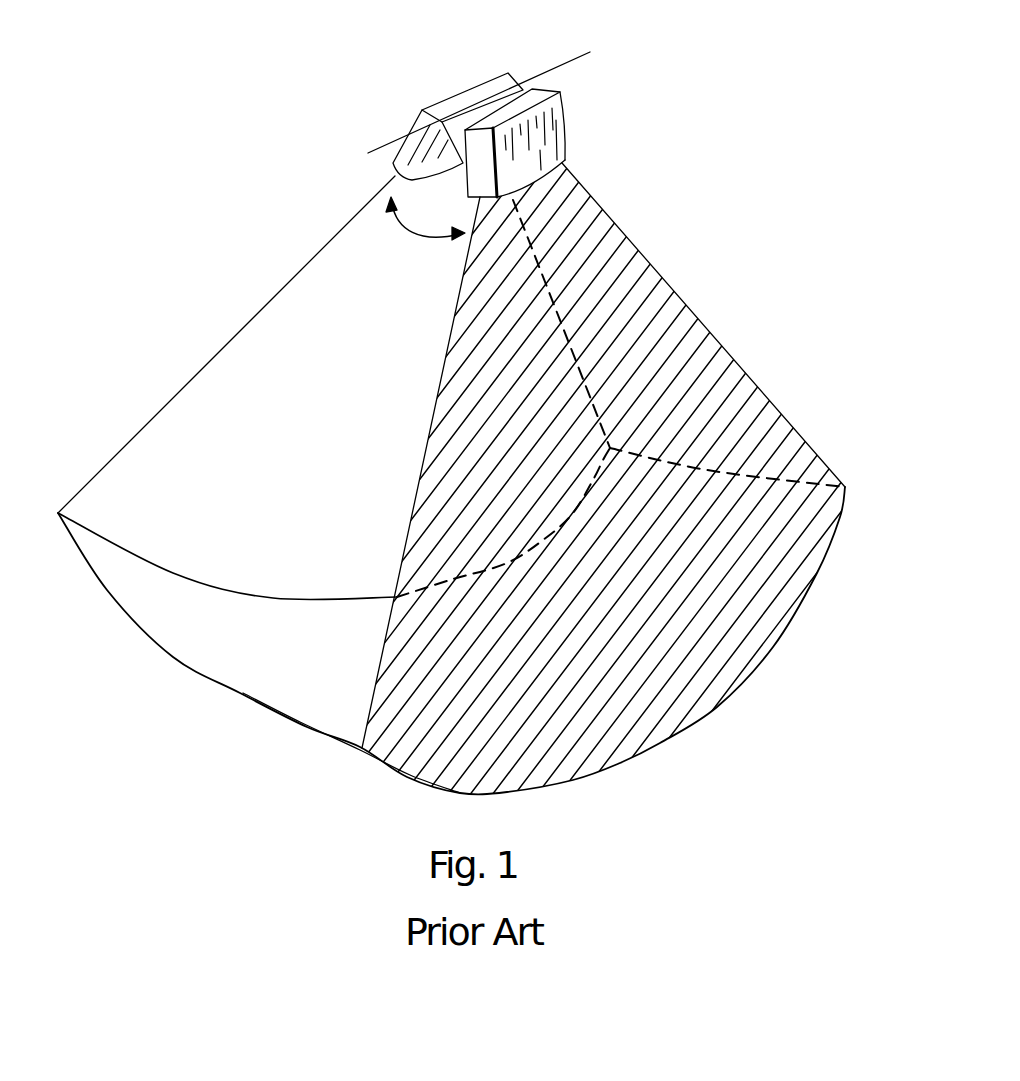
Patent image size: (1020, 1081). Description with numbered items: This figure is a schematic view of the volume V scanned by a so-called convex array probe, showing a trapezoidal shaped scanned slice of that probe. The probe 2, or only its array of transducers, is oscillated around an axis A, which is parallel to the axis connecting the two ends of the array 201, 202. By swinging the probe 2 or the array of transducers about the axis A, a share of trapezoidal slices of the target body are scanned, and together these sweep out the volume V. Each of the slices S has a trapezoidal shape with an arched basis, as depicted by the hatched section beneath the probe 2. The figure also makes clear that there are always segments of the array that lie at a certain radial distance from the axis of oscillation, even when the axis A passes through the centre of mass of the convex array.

The probe 2 is at (504, 207).
The end of the array 201 is at (566, 130).
The end of the array 202 is at (462, 276).
The axis A is at (570, 61).
The volume V is at (247, 340).
The slices S is at (682, 322).